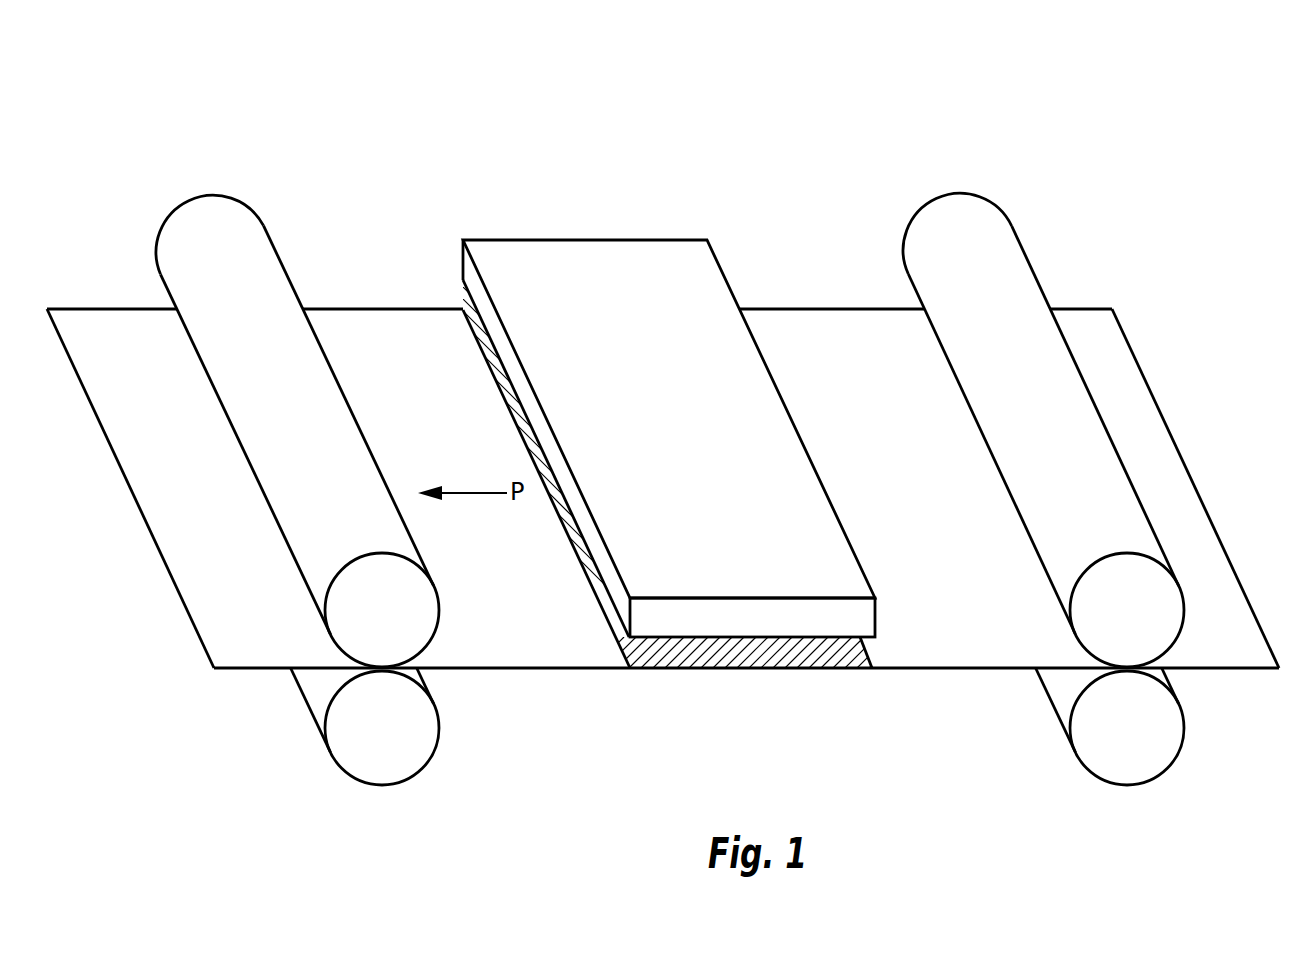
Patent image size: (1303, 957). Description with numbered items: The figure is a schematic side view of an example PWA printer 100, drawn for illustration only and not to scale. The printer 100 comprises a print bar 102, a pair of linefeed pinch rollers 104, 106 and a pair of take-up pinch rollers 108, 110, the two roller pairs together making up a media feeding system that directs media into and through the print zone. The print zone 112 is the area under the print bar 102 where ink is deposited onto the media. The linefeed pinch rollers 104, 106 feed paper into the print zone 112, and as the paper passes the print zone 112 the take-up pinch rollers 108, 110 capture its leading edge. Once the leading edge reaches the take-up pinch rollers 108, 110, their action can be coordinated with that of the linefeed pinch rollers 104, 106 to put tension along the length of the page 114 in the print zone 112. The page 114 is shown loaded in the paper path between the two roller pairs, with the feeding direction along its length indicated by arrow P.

The PWA printer 100 is at (392, 102).
The print bar 102 is at (683, 434).
The linefeed pinch roller 104 is at (918, 213).
The linefeed pinch roller 106 is at (1185, 745).
The take-up pinch roller 108 is at (438, 745).
The take-up pinch roller 110 is at (172, 214).
The print zone 112 is at (723, 658).
The page 114 is at (210, 480).